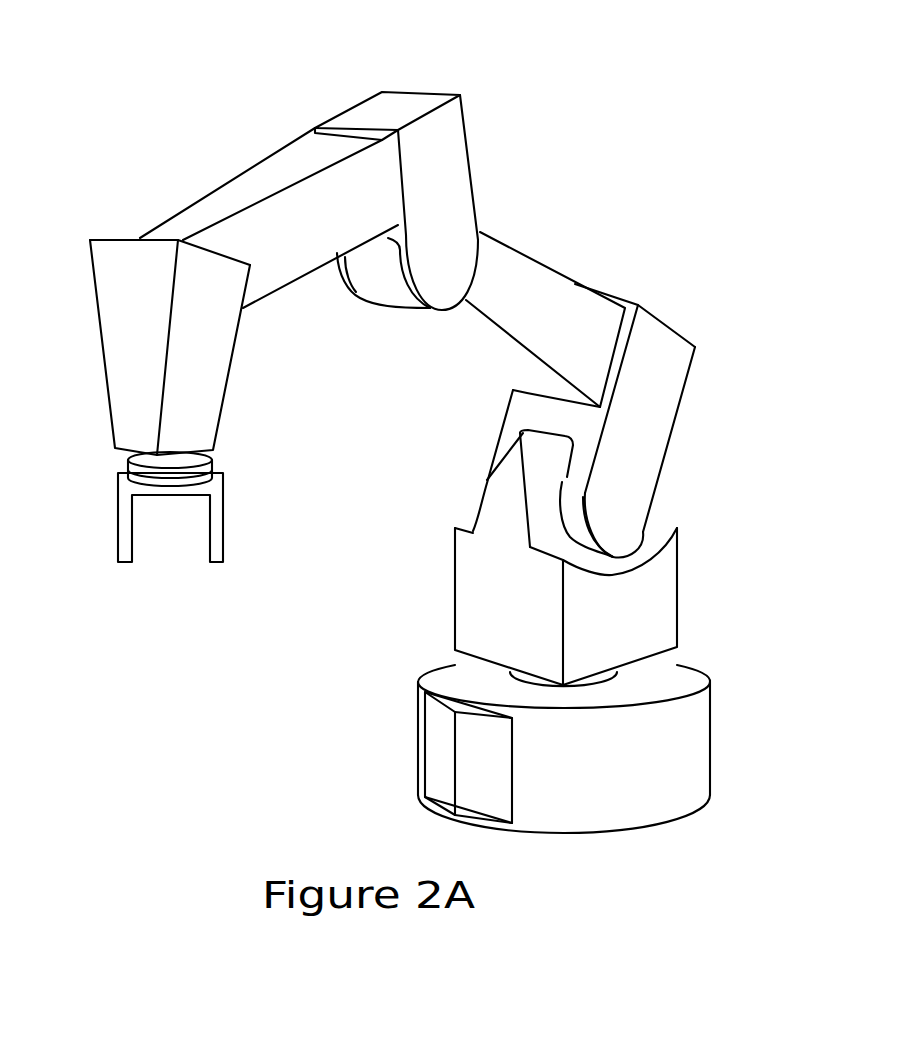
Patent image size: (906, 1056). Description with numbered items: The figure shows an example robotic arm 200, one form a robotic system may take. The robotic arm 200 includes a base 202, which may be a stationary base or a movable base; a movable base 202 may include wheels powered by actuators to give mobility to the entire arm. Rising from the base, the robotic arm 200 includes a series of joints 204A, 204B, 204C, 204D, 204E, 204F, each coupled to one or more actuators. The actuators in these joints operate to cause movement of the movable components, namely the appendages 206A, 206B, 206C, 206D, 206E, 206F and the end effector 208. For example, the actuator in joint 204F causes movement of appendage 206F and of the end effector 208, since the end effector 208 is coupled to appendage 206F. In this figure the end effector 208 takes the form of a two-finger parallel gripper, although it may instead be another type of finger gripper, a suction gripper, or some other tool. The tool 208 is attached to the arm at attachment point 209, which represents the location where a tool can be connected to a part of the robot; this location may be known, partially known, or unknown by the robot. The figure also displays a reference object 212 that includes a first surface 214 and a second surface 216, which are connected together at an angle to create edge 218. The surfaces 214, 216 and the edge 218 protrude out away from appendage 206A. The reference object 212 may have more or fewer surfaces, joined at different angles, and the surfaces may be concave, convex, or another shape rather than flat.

The robotic arm 200 is at (138, 82).
The base 202 is at (687, 735).
The joint 204A is at (580, 687).
The joint 204B is at (637, 512).
The joint 204C is at (688, 377).
The joint 204D is at (445, 287).
The joint 204E is at (467, 123).
The joint 204F is at (140, 237).
The appendage 206A is at (662, 610).
The appendage 206B is at (662, 438).
The appendage 206C is at (573, 290).
The appendage 206D is at (453, 187).
The appendage 206E is at (258, 180).
The appendage 206F is at (197, 355).
The end effector 208 is at (225, 517).
The attachment point 209 is at (203, 453).
The reference object 212 is at (425, 712).
The first surface 214 is at (440, 768).
The second surface 216 is at (483, 737).
The edge 218 is at (453, 785).